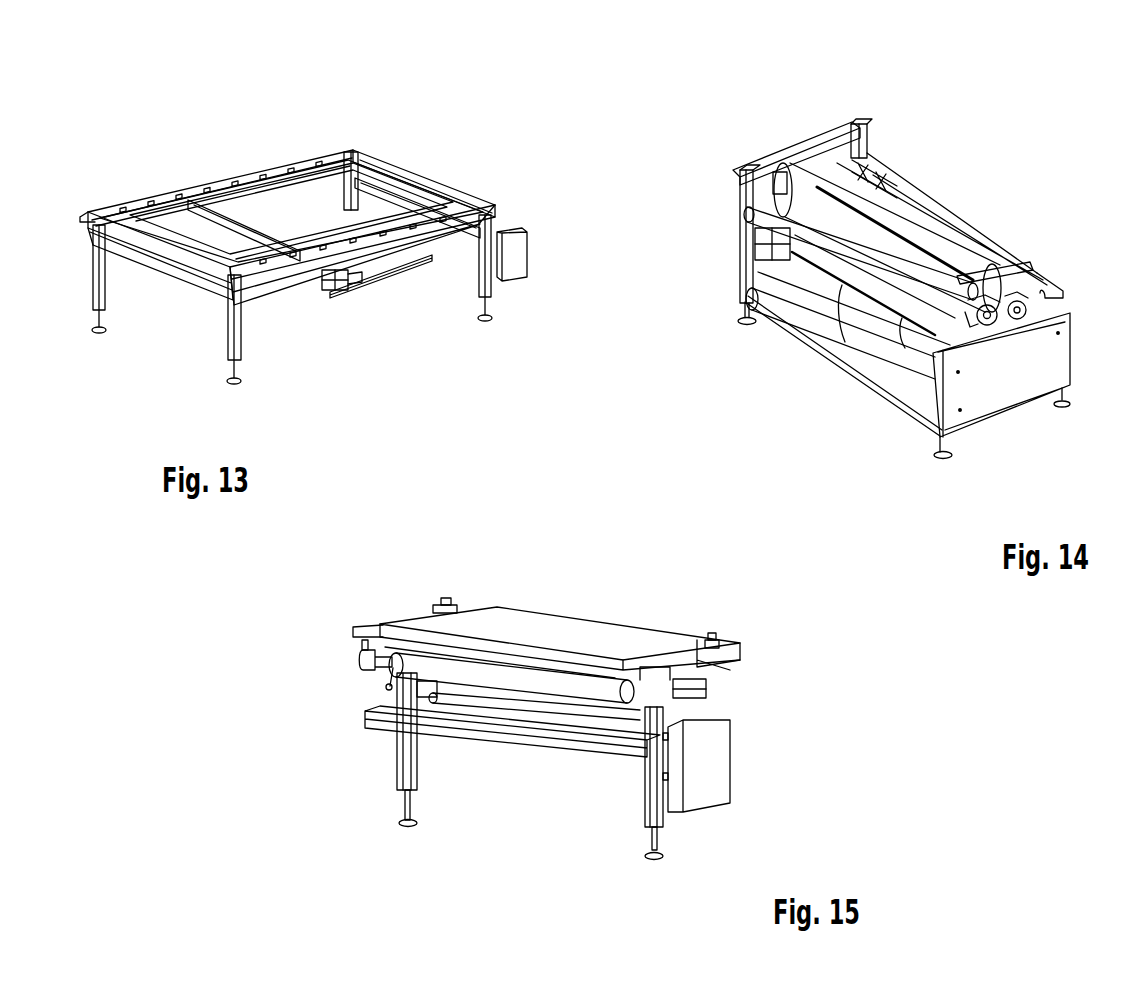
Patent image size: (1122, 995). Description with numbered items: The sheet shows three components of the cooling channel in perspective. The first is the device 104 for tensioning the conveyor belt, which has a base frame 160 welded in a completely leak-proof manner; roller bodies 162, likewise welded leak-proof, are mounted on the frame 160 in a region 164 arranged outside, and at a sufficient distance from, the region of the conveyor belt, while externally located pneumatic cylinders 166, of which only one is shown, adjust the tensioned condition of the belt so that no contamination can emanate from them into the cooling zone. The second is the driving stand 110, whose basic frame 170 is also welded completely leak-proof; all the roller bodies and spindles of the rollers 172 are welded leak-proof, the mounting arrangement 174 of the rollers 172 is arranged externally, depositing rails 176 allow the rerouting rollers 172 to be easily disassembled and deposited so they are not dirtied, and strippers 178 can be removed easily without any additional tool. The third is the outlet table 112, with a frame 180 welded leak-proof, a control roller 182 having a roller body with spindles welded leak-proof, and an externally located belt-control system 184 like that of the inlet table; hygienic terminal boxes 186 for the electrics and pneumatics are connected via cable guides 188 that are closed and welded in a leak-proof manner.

In FIG. 13, the device for tensioning the belt 104 is at (124, 190).
In FIG. 14, the driving stand 110 is at (1047, 248).
In FIG. 15, the outlet table 112 is at (601, 597).
In FIG. 13, the base frame 160 is at (103, 290).
In FIG. 13, the roller bodies 162 is at (210, 232).
In FIG. 13, the region 164 is at (333, 278).
In FIG. 13, the pneumatic cylinders 166 is at (413, 254).
In FIG. 14, the basic frame 170 is at (748, 250).
In FIG. 14, the rollers 172 is at (930, 250).
In FIG. 14, the mounting arrangement 174 is at (988, 330).
In FIG. 14, the depositing rails 176 is at (983, 237).
In FIG. 14, the strippers 178 is at (867, 152).
In FIG. 15, the frame 180 is at (397, 777).
In FIG. 15, the control roller 182 is at (388, 680).
In FIG. 15, the belt-control system 184 is at (690, 682).
In FIG. 15, the hygienic terminal boxes 186 is at (713, 767).
In FIG. 15, the cable guides 188 is at (488, 703).